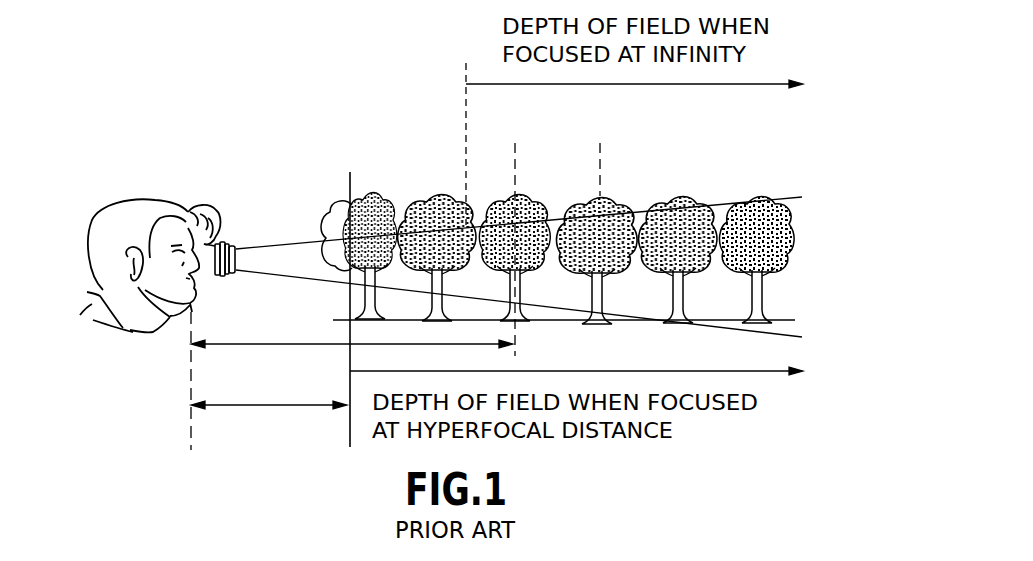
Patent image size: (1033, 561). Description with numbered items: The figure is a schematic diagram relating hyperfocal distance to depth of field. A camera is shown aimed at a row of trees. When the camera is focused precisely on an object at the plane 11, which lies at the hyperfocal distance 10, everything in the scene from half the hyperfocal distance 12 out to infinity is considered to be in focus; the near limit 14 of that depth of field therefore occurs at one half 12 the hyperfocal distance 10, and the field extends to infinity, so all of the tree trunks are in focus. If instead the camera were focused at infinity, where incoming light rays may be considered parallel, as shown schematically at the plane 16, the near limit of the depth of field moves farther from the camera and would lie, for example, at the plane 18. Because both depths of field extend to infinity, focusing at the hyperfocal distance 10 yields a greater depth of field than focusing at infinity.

The hyperfocal distance 10 is at (308, 345).
The plane 11 is at (515, 172).
The half the hyperfocal distance 12 is at (282, 407).
The near limit 14 is at (352, 186).
The plane 16 is at (600, 172).
The plane 18 is at (467, 130).